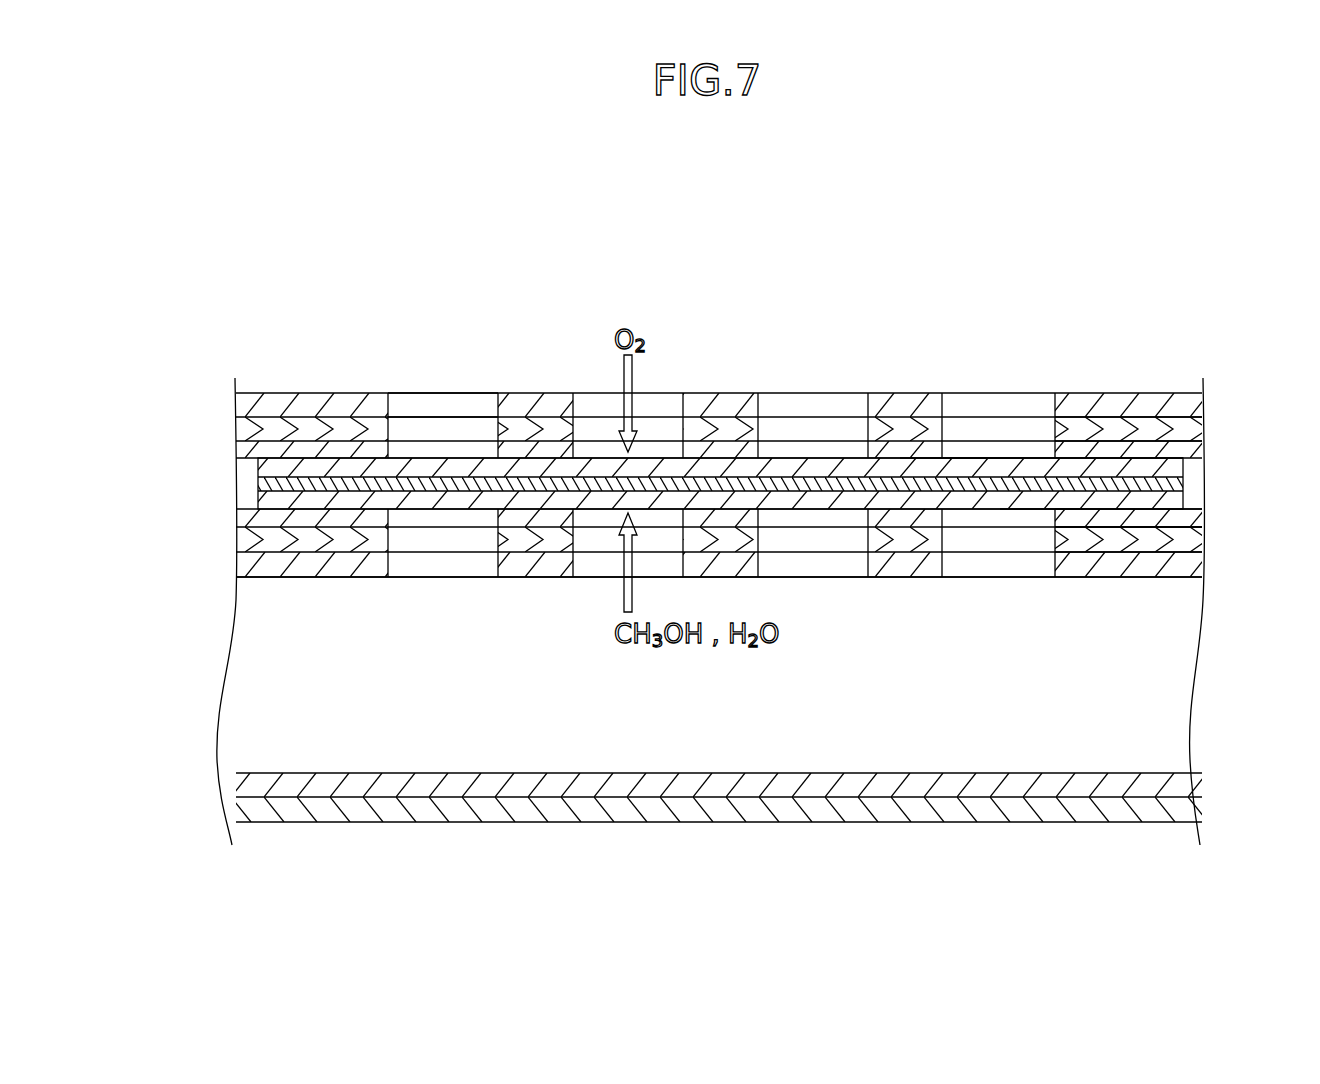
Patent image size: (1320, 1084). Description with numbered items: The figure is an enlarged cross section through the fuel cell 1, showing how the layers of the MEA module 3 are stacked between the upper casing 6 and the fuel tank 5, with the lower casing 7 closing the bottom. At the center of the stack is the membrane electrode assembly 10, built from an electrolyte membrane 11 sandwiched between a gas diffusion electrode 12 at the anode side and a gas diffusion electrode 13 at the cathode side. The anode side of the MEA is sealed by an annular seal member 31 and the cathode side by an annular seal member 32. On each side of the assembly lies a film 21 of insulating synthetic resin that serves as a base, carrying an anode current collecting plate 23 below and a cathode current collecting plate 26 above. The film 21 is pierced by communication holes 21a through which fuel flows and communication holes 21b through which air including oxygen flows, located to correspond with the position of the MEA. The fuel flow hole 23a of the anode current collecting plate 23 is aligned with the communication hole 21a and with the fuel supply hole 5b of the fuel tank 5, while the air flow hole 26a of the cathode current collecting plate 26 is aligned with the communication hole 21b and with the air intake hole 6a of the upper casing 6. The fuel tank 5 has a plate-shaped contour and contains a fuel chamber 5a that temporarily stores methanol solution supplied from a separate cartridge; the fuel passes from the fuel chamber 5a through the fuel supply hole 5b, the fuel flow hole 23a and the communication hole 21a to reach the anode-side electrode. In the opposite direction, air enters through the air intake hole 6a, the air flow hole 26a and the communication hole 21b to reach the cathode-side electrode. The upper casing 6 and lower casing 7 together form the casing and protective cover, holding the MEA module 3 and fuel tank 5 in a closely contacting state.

The fuel cell 1 is at (142, 233).
The MEA module 3 is at (203, 540).
The fuel tank 5 is at (203, 563).
The fuel chamber 5a is at (757, 731).
The fuel supply hole 5b is at (401, 562).
The upper casing 6 is at (258, 400).
The air intake hole 6a is at (402, 408).
The lower casing 7 is at (317, 813).
The membrane electrode assembly 10 is at (935, 312).
The electrolyte membrane 11 is at (1003, 475).
The gas diffusion electrode at anode side 12 is at (1035, 497).
The gas diffusion electrode at cathode side 13 is at (973, 458).
The film 21 is at (1192, 428).
The communication hole 21a is at (433, 540).
The communication hole 21b is at (433, 430).
The anode current collecting plate 23 is at (1183, 517).
The fuel flow hole 23a is at (467, 522).
The cathode current collecting plate 26 is at (1175, 447).
The air flow hole 26a is at (467, 448).
The annular seal member 31 is at (1182, 497).
The annular seal member 32 is at (1173, 465).